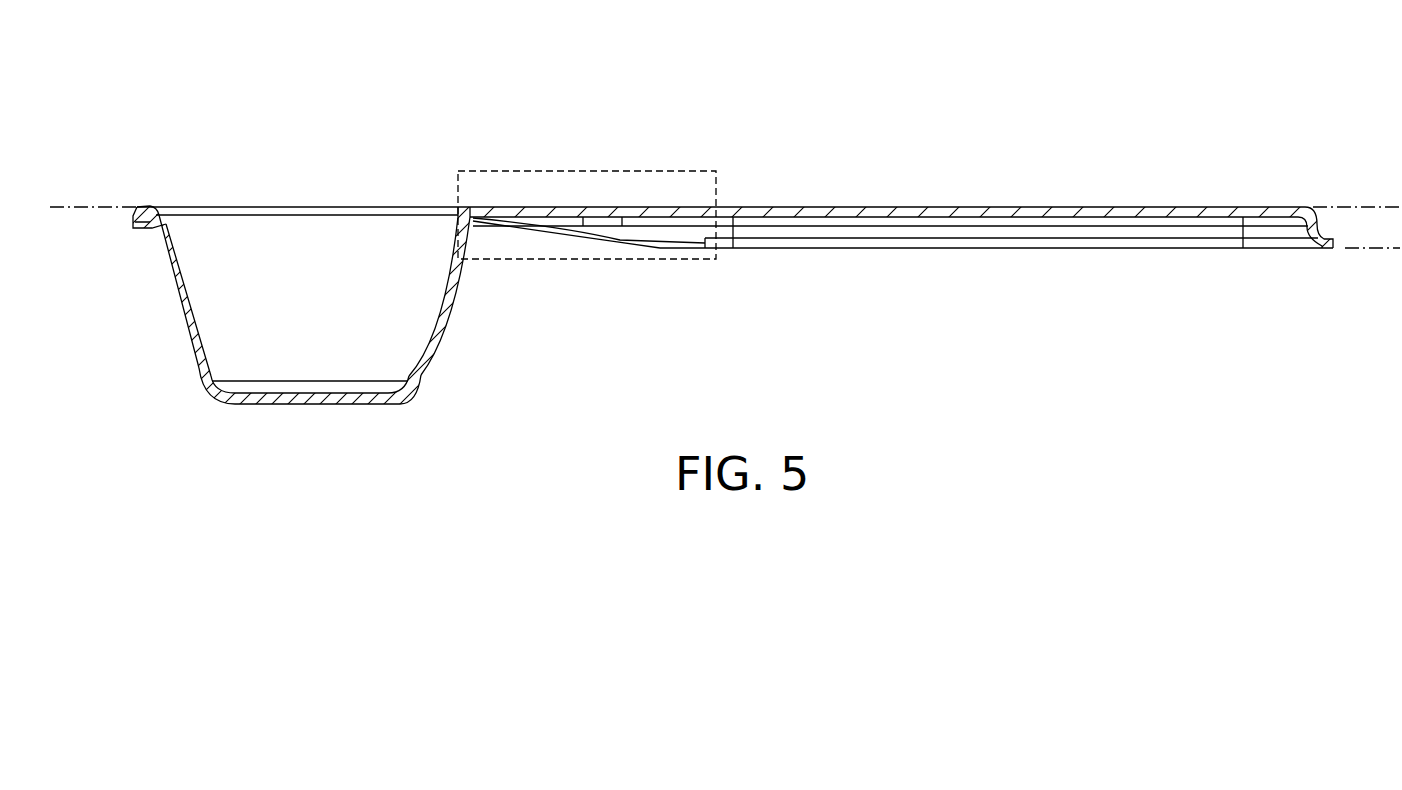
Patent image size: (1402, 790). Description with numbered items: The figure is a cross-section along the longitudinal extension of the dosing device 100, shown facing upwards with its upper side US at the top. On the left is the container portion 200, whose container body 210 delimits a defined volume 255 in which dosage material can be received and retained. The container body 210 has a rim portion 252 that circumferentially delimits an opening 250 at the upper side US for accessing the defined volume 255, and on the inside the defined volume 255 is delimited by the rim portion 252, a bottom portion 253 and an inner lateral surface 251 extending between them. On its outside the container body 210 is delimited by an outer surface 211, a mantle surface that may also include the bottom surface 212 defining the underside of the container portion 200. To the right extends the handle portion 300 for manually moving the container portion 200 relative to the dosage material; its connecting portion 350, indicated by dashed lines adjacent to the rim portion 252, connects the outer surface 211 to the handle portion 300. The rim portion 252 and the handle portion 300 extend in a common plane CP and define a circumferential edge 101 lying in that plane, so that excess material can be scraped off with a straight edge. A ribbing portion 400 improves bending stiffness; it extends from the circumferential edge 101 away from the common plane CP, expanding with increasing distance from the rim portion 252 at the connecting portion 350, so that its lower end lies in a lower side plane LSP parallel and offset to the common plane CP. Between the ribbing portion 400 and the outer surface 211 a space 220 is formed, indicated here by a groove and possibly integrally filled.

The dosing device 100 is at (1180, 90).
The circumferential edge 101 is at (133, 205).
The container portion 200 is at (425, 204).
The container body 210 is at (422, 370).
The outer surface 211 is at (442, 317).
The bottom surface 212 is at (306, 406).
The space 220 is at (480, 226).
The opening 250 is at (297, 252).
The inner lateral surface 251 is at (182, 283).
The rim portion 252 is at (133, 224).
The bottom portion 253 is at (273, 392).
The defined volume 255 is at (330, 324).
The handle portion 300 is at (947, 213).
The connecting portion 350 is at (645, 162).
The ribbing portion 400 is at (148, 230).
The upper side US is at (328, 205).
The common plane CP is at (1368, 202).
The lower side plane LSP is at (1372, 253).